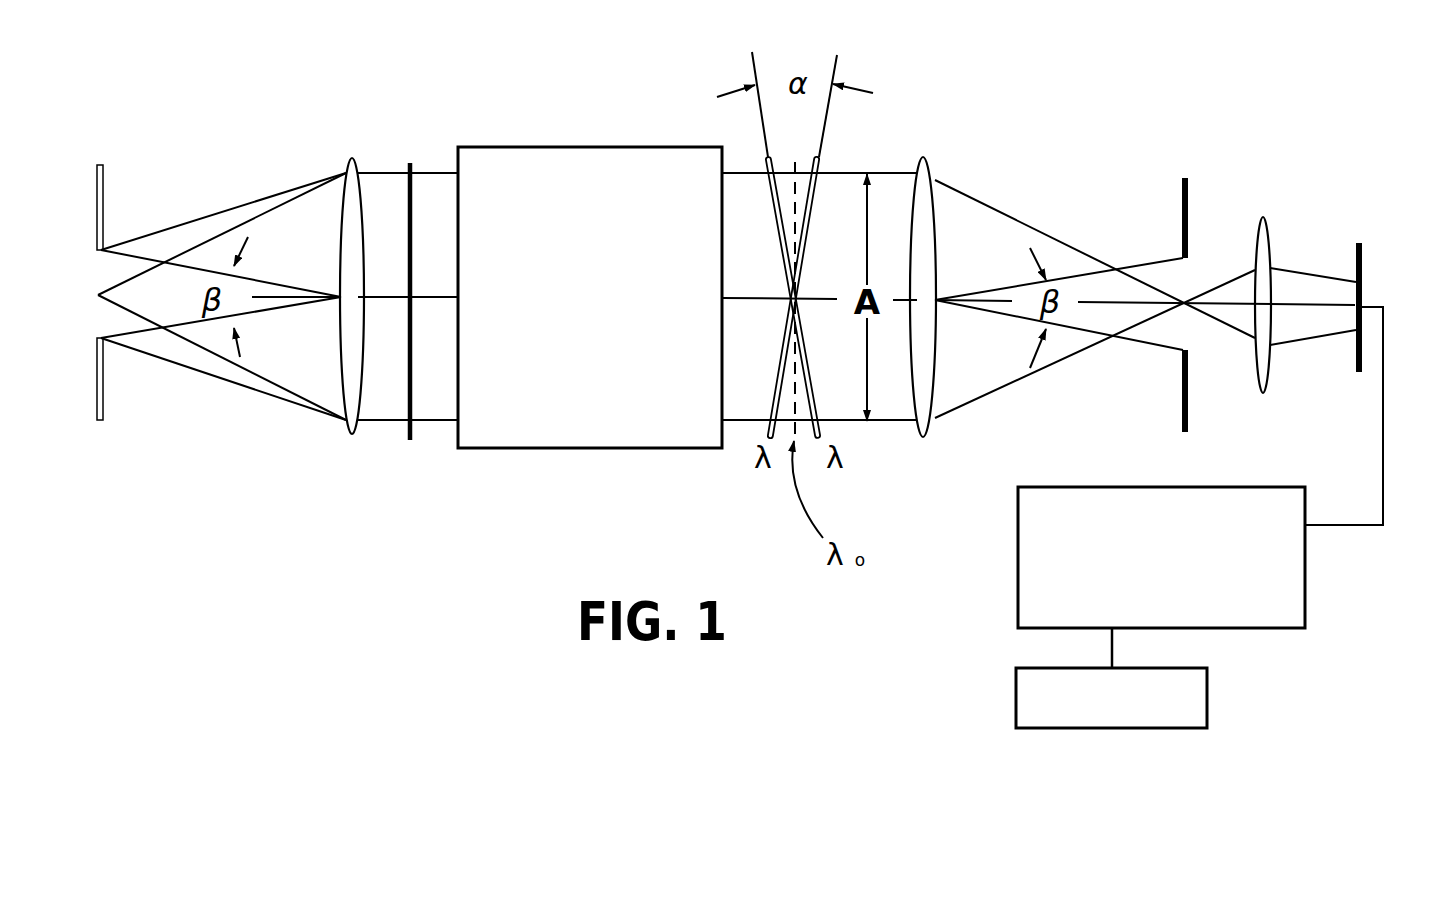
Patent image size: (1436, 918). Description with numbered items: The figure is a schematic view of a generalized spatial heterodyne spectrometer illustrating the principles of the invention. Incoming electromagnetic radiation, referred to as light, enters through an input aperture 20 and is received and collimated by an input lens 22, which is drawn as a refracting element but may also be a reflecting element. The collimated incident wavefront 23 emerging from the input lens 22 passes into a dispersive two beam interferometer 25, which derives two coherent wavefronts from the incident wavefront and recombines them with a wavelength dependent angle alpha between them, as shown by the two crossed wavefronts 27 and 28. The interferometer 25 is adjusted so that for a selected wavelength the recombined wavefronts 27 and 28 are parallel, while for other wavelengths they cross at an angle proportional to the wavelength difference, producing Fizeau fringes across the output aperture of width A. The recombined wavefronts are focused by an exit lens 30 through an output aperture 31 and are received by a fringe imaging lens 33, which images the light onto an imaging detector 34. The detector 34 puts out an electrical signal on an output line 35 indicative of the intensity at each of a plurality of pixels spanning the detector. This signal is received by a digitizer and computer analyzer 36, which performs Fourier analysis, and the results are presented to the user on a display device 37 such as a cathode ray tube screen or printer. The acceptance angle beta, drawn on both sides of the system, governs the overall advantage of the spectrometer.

The input aperture 20 is at (108, 248).
The input lens 22 is at (357, 170).
The collimated incident wavefront 23 is at (415, 446).
The dispersive two beam interferometer 25 is at (597, 449).
The wavefront 27 is at (822, 158).
The wavefront 28 is at (762, 157).
The exit lens 30 is at (935, 425).
The output aperture 31 is at (1182, 258).
The fringe imaging lens 33 is at (1270, 237).
The imaging detector 34 is at (1362, 263).
The output line 35 is at (1363, 528).
The digitizer and computer analyzer 36 is at (1018, 540).
The display device 37 is at (1016, 700).